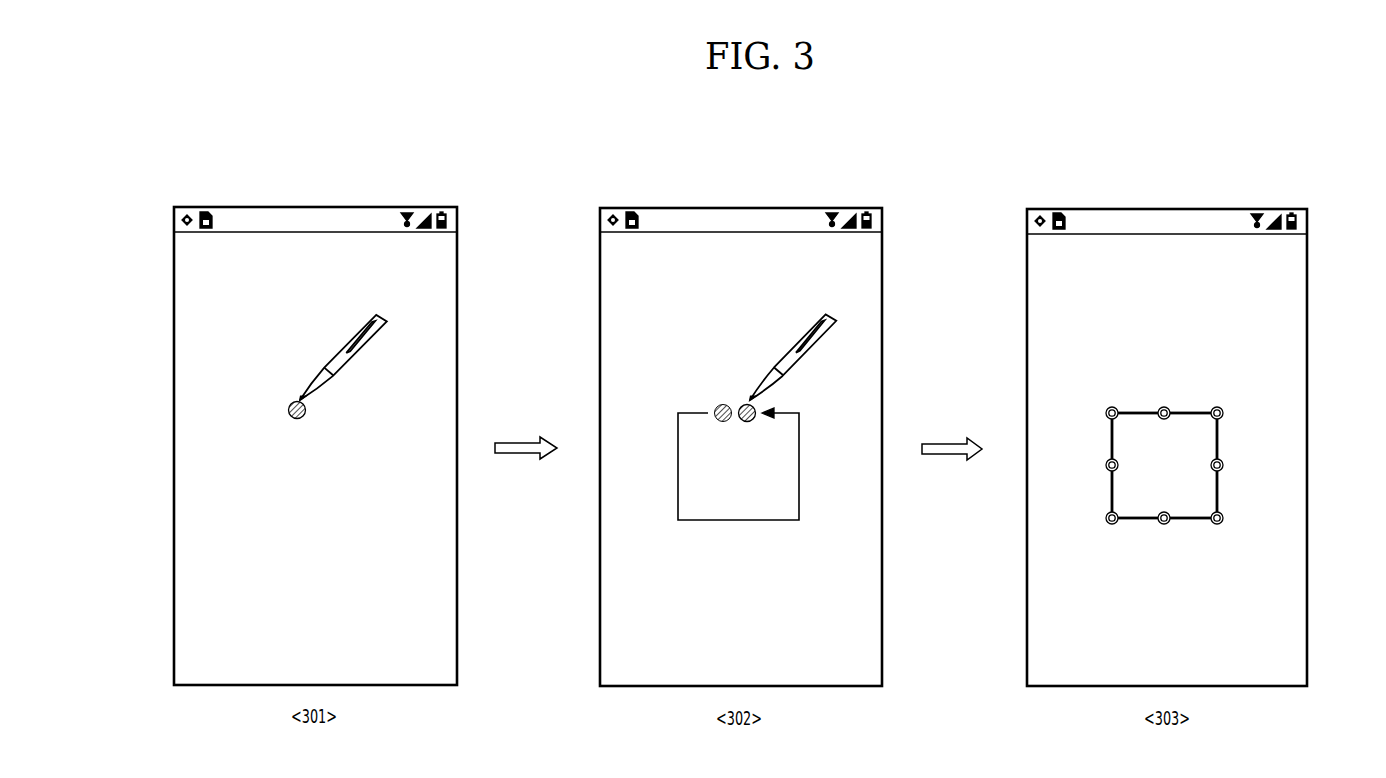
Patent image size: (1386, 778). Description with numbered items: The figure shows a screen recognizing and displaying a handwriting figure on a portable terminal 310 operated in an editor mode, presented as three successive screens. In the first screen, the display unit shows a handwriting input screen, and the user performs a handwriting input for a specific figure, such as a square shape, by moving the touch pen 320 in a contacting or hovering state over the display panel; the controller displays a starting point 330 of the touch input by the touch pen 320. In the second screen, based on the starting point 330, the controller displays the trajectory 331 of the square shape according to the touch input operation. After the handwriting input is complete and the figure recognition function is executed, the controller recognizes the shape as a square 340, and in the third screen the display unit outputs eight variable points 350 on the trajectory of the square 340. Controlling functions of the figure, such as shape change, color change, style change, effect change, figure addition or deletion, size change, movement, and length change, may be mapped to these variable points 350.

The electronic device display screen 310 is at (468, 248).
The touch pen 320 is at (349, 364).
The starting point 330 is at (288, 407).
The trajectory 331 is at (800, 497).
The square 340 is at (1218, 442).
The variable points 350 is at (1224, 411).